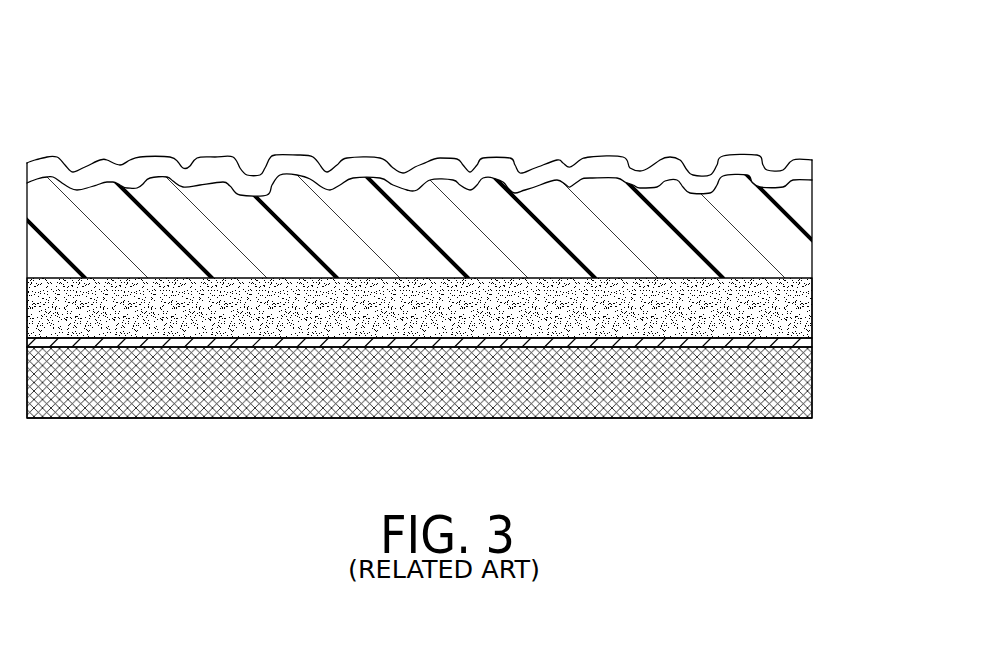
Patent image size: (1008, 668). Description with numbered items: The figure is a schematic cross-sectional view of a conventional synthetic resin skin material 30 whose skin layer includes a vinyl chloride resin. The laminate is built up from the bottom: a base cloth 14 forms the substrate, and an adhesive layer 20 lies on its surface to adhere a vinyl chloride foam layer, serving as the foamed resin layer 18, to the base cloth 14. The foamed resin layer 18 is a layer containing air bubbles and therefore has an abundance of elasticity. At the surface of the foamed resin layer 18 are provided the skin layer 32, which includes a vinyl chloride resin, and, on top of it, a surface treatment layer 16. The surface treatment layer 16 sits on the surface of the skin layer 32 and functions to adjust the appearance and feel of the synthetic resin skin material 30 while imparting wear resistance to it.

The synthetic resin skin material 30 is at (452, 88).
The surface treatment layer 16 is at (808, 171).
The skin layer 32 is at (783, 232).
The foamed resin layer 18 is at (783, 303).
The adhesive layer 20 is at (807, 342).
The base cloth 14 is at (783, 385).